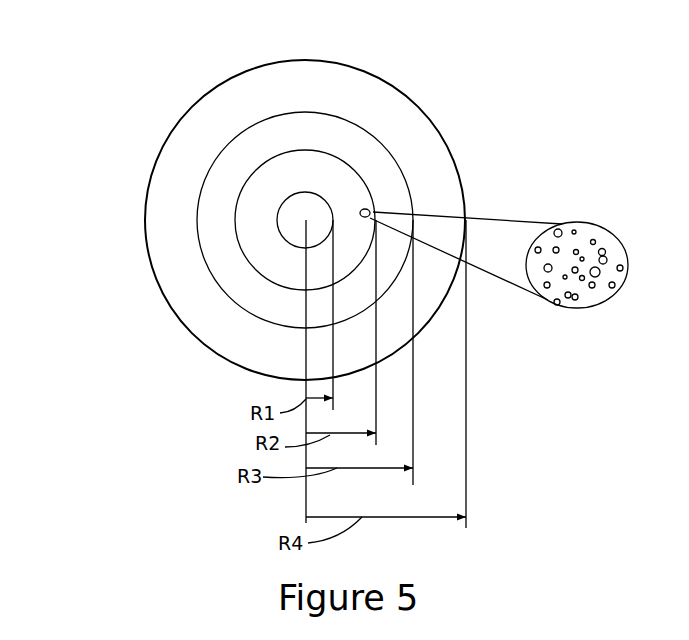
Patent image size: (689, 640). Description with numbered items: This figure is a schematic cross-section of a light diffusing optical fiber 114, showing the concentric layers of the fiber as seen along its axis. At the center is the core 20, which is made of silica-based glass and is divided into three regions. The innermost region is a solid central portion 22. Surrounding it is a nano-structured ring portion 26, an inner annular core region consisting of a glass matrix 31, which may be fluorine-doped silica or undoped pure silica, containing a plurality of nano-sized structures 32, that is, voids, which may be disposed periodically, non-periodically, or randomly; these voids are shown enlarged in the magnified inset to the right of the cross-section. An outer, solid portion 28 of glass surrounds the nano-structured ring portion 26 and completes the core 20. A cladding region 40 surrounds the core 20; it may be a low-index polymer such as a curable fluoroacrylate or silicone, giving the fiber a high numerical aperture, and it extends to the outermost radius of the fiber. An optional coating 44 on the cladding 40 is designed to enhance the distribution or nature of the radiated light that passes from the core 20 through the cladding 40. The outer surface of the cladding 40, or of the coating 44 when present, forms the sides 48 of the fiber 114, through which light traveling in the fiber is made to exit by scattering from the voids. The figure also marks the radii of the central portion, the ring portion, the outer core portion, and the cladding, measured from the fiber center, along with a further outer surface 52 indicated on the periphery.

The light diffusing optical fiber 114 is at (168, 92).
The core 20 is at (563, 90).
The solid central portion 22 is at (315, 210).
The nano-structured ring portion 26 is at (350, 177).
The outer solid portion 28 is at (353, 147).
The cladding region 40 is at (395, 110).
The coating 44 is at (377, 75).
The sides 48 is at (153, 178).
The jacket surface 52 is at (429, 117).
The glass matrix 31 is at (588, 225).
The nano-sized structures 32 is at (560, 304).